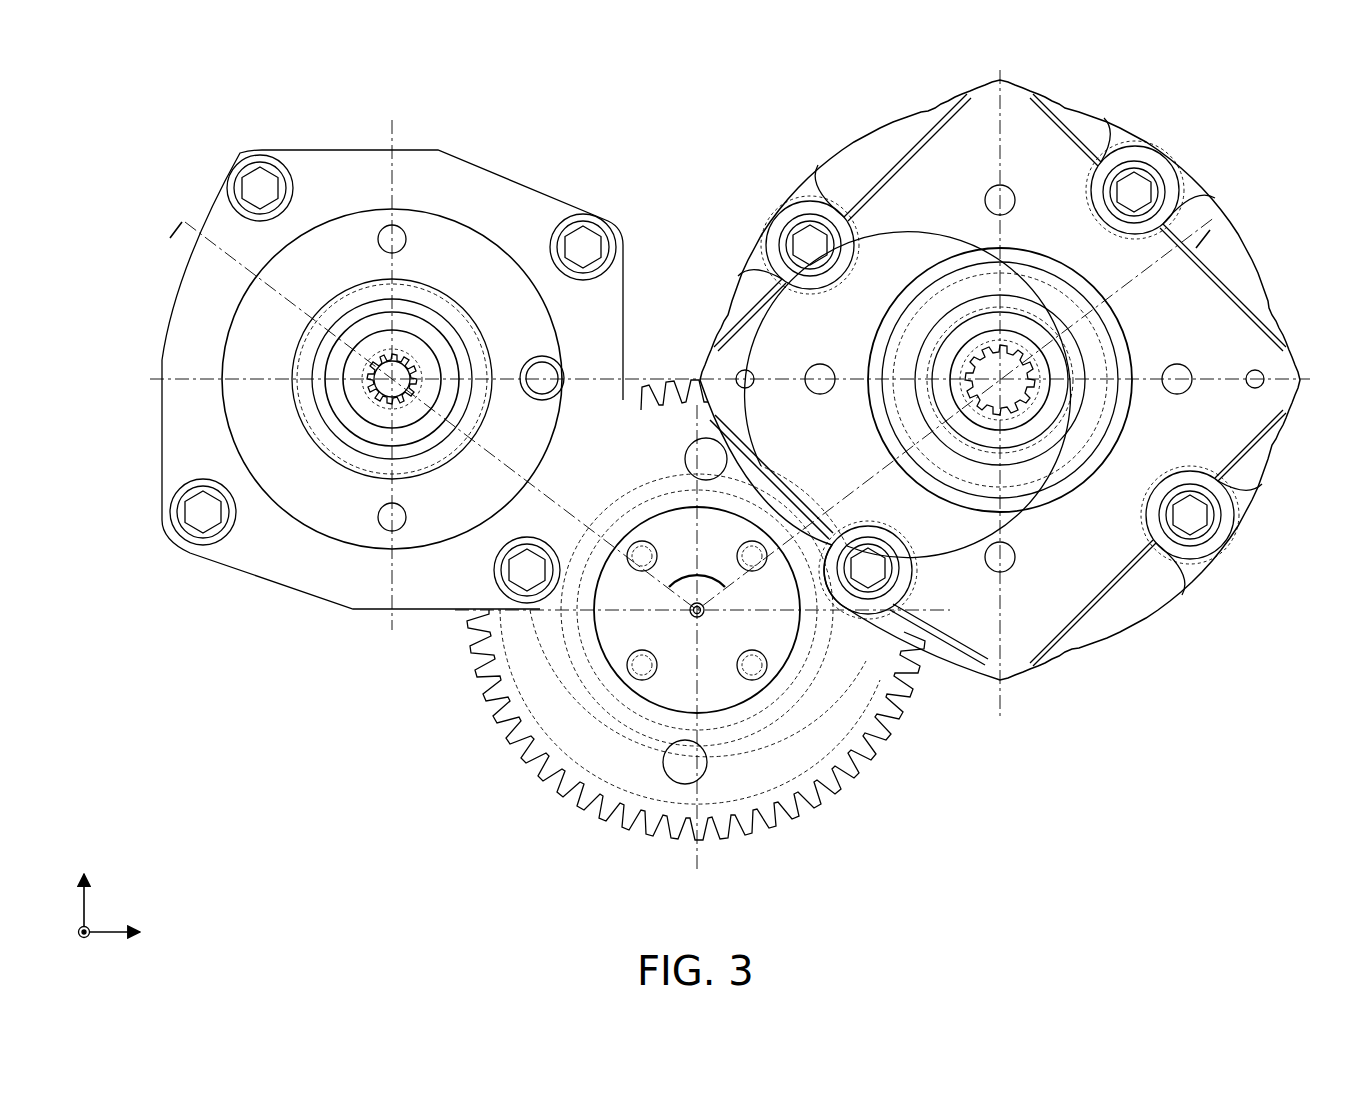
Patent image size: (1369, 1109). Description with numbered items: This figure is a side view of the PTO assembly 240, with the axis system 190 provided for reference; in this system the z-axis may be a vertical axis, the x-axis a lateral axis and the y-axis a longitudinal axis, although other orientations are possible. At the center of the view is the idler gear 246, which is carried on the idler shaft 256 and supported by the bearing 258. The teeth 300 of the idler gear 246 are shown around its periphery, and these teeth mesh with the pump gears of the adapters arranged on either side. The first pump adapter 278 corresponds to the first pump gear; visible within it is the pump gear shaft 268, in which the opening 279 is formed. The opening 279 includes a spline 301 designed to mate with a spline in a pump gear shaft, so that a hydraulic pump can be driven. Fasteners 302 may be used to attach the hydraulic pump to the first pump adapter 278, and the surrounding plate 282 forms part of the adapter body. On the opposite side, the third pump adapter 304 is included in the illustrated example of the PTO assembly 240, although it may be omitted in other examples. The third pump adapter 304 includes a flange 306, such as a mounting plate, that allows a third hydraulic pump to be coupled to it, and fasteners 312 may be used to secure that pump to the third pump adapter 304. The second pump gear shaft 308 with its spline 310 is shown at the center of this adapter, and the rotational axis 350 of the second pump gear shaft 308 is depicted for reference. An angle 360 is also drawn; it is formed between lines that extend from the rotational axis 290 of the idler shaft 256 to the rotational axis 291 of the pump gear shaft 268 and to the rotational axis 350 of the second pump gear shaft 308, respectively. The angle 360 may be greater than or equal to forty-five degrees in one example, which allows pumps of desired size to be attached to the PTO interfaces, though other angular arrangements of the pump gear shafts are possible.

The PTO assembly 240 is at (86, 112).
The first pump adapter 278 is at (194, 176).
The flange plate 282 is at (340, 517).
The pump gear shaft 268 is at (350, 362).
The opening 279 is at (402, 353).
The rotational axis 291 is at (395, 378).
The spline 301 is at (372, 394).
The fasteners 302 is at (546, 376).
The third pump adapter 304 is at (1292, 247).
The flange 306 is at (1170, 320).
The fasteners 312 is at (1139, 189).
The rotational axis 350 is at (998, 378).
The second pump gear shaft 308 is at (1008, 418).
The spline 310 is at (1018, 374).
The teeth 300 is at (525, 765).
The idler gear 246 is at (793, 722).
The idler shaft 256 is at (720, 682).
The bearing 258 is at (640, 707).
The rotational axis 290 is at (702, 614).
The angle 360 is at (707, 575).
The axis system 190 is at (120, 896).